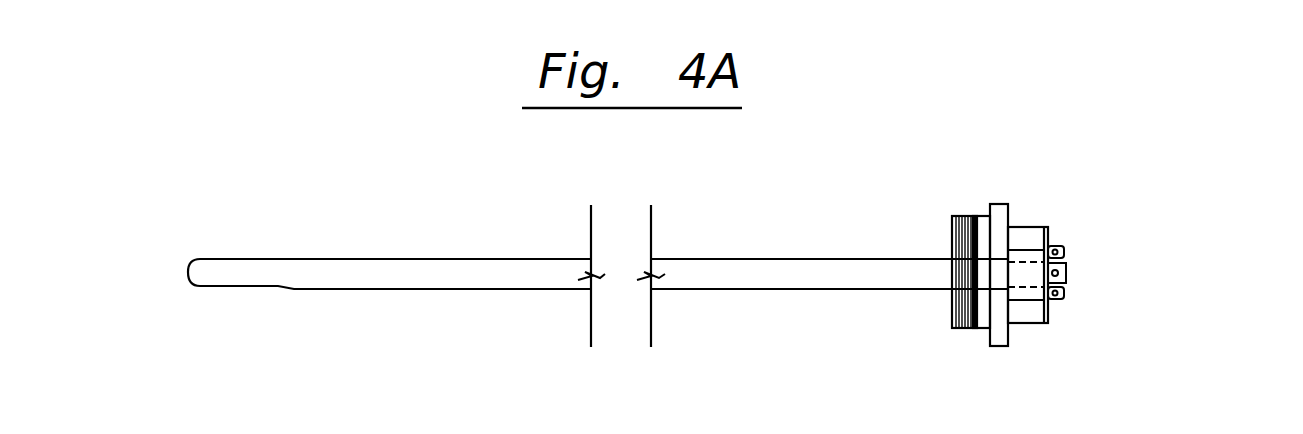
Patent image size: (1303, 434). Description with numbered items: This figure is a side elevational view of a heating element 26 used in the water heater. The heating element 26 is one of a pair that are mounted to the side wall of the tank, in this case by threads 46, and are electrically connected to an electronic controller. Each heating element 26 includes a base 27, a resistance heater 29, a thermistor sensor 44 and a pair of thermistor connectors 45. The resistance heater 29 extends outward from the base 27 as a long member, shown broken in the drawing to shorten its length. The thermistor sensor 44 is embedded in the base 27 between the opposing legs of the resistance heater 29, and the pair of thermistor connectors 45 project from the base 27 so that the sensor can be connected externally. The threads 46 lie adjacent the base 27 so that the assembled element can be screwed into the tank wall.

The heating element 26 is at (333, 226).
The resistance heater 29 is at (761, 258).
The threads 46 is at (954, 216).
The thermistor sensor 44 is at (1020, 262).
The base 27 is at (1027, 324).
The thermistor connectors 45 is at (1068, 294).